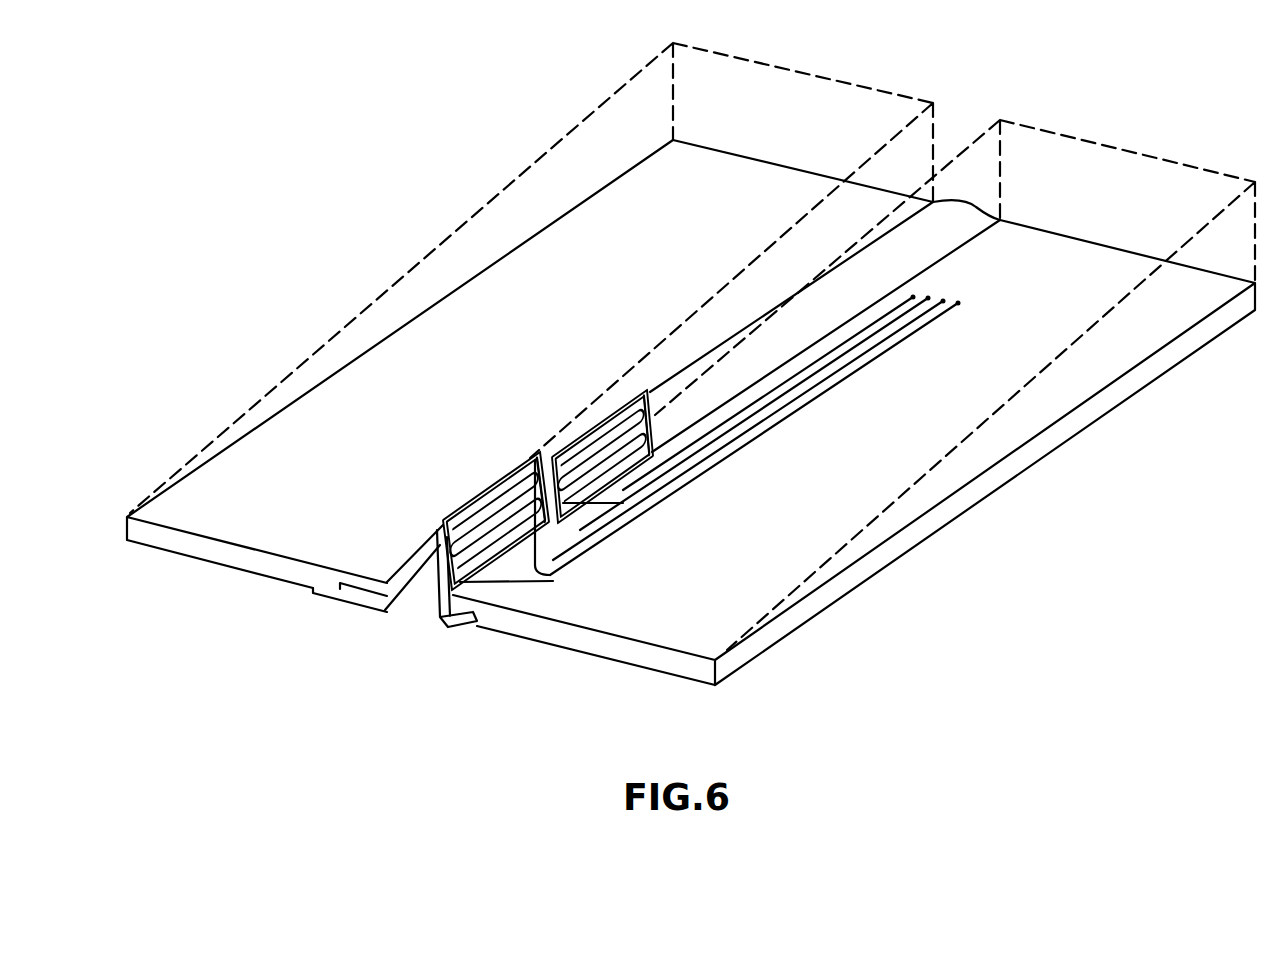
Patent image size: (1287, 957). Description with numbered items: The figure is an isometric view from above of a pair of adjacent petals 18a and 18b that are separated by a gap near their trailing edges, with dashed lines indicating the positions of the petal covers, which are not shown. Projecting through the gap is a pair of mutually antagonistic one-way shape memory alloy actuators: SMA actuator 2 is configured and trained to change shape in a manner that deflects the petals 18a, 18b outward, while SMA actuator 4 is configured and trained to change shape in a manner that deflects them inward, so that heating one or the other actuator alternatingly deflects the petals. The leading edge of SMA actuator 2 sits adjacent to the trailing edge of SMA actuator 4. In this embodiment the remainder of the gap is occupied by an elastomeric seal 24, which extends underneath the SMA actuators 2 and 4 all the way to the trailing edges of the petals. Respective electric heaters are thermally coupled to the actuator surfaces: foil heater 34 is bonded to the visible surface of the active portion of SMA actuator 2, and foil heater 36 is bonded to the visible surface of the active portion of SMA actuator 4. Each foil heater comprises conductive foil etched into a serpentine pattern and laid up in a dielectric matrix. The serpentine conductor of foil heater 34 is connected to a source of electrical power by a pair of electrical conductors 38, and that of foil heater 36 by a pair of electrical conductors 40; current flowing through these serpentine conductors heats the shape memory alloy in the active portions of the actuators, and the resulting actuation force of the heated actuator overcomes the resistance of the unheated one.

The SMA actuator 2 is at (468, 510).
The SMA actuator 4 is at (610, 412).
The petal 18a is at (852, 588).
The petal 18b is at (190, 543).
The elastomeric seal 24 is at (693, 355).
The foil heater 34 is at (513, 477).
The foil heater 36 is at (600, 467).
The electrical conductors 38 is at (840, 373).
The electrical conductors 40 is at (873, 330).